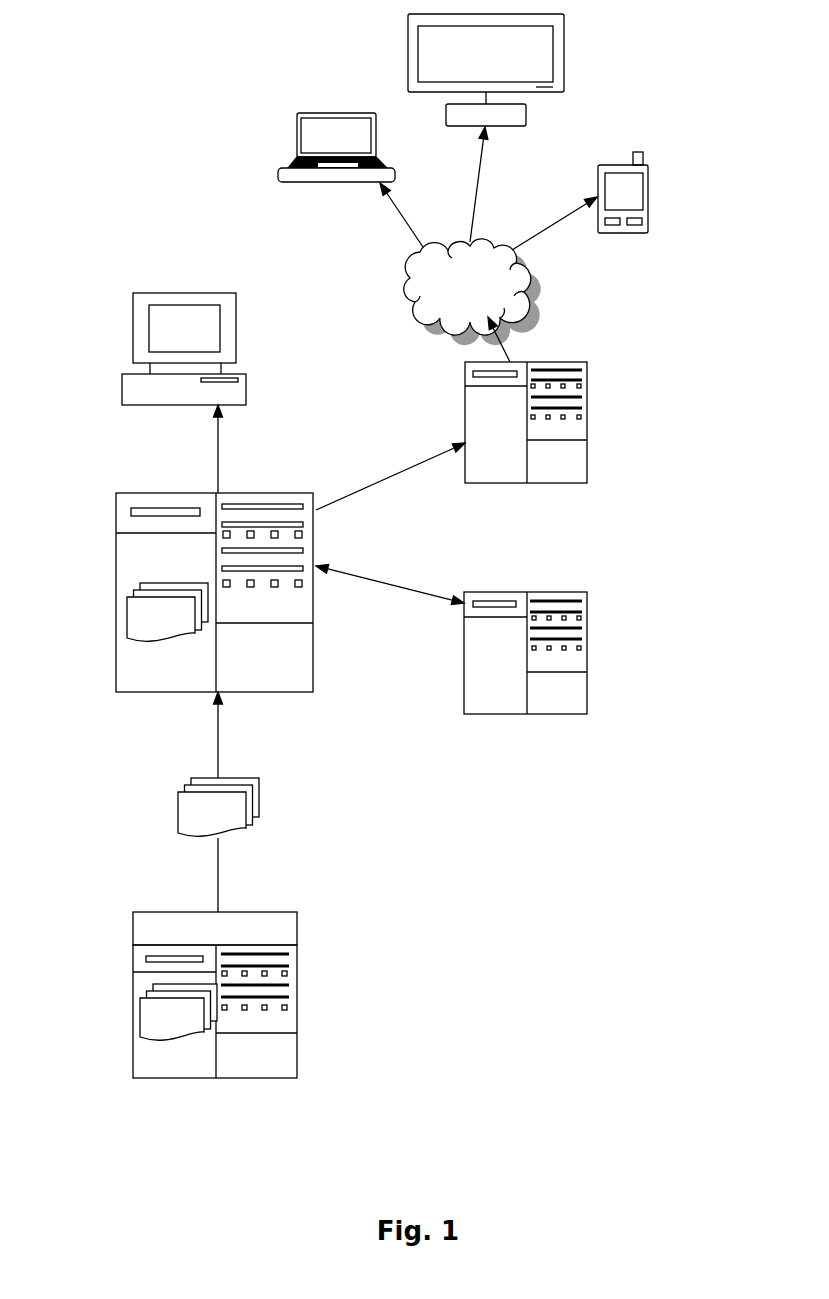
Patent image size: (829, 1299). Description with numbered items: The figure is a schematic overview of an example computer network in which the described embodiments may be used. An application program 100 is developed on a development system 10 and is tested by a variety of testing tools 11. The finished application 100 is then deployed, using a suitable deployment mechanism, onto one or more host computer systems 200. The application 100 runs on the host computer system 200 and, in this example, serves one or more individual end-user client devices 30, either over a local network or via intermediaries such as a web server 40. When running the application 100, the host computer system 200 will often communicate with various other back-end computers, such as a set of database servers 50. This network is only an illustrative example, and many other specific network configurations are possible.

The development system 10 is at (291, 1003).
The testing tools 11 is at (284, 927).
The end-user client devices 30 is at (567, 52).
The web server 40 is at (588, 413).
The database servers 50 is at (588, 657).
The application program 100 is at (151, 610).
The host computer system 200 is at (298, 660).